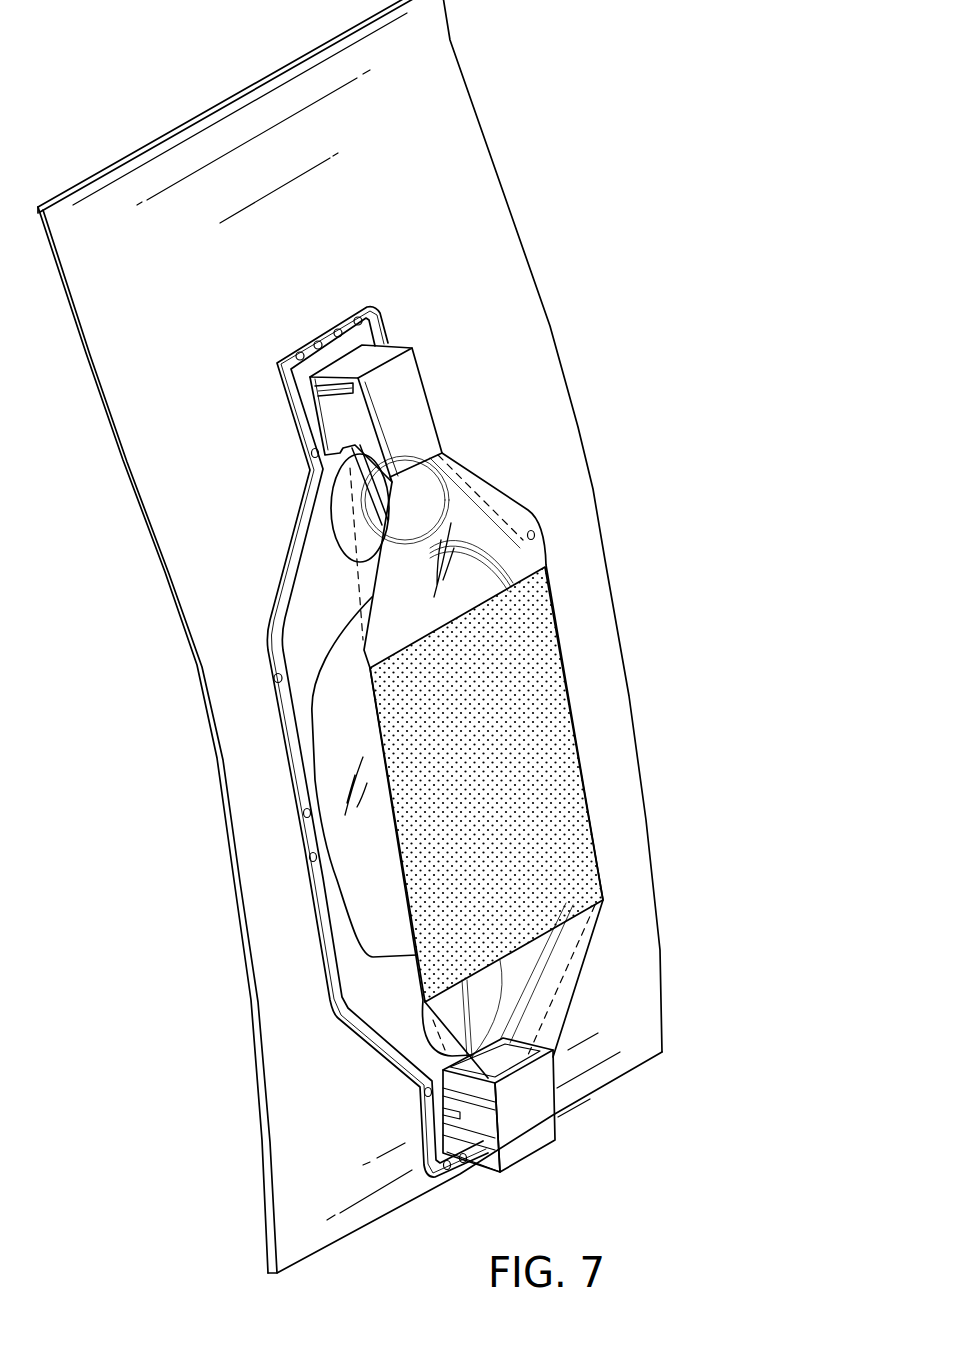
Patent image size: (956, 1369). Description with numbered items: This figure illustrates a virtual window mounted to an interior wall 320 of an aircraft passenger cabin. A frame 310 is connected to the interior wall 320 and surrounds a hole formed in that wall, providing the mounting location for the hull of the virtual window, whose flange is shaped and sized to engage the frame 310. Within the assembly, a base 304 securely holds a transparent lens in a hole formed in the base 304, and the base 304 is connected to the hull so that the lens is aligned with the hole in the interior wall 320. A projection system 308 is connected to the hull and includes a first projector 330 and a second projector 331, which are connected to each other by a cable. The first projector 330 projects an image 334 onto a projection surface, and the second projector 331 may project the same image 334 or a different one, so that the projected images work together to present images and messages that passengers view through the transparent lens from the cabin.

The interior wall 320 is at (198, 116).
The projection system 308 is at (400, 338).
The second projector 331 is at (335, 416).
The frame 310 is at (296, 528).
The image 334 is at (573, 692).
The base 304 is at (380, 1012).
The first projector 330 is at (487, 1167).